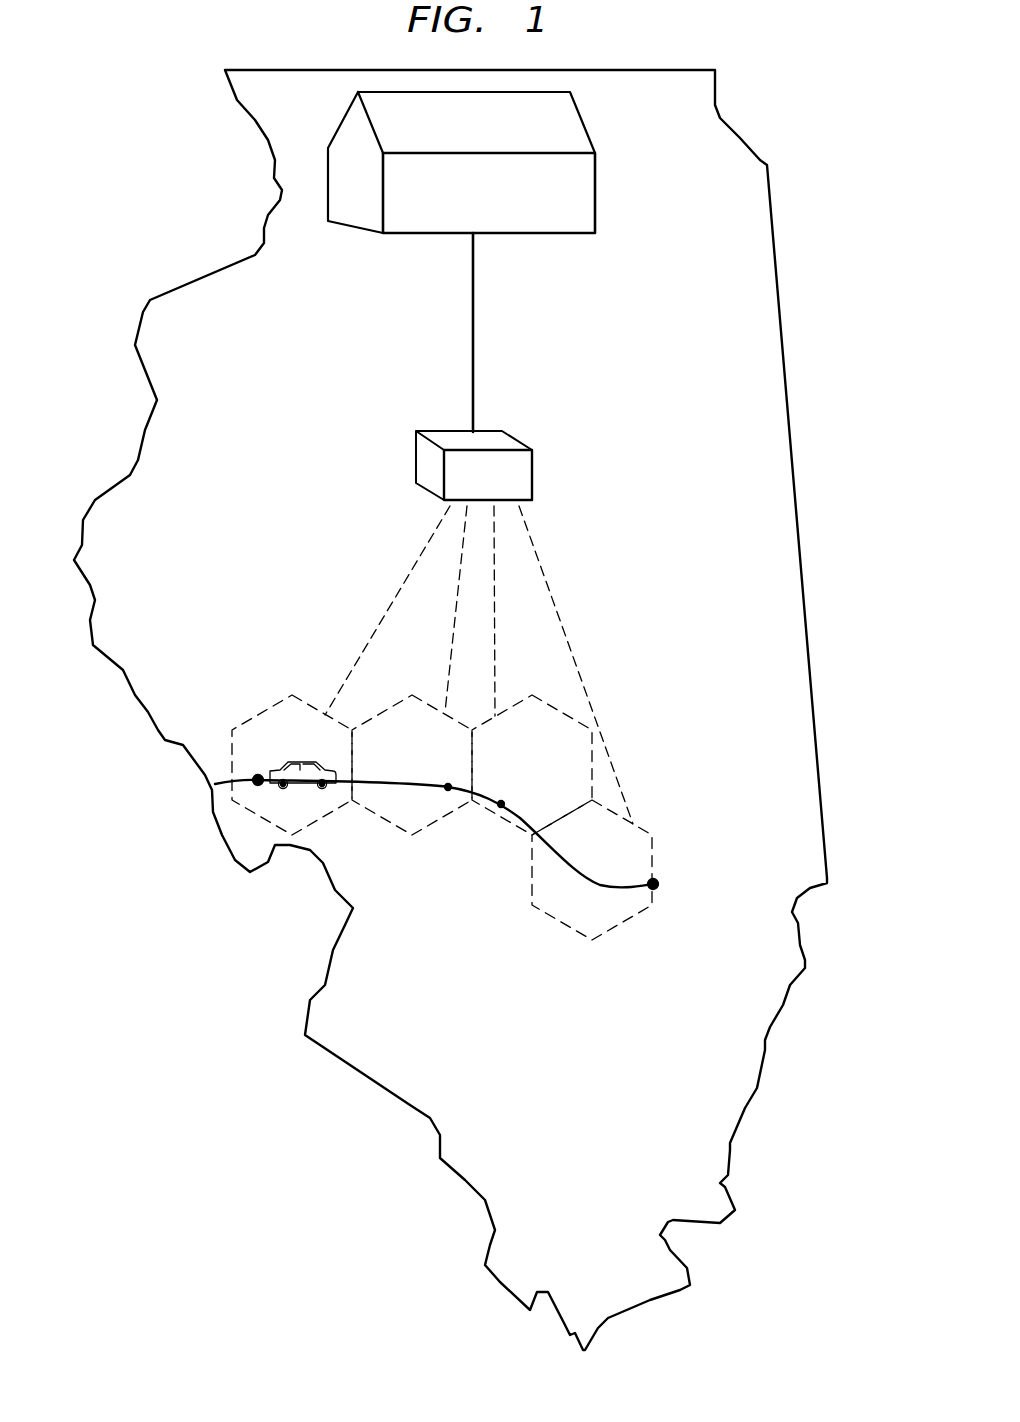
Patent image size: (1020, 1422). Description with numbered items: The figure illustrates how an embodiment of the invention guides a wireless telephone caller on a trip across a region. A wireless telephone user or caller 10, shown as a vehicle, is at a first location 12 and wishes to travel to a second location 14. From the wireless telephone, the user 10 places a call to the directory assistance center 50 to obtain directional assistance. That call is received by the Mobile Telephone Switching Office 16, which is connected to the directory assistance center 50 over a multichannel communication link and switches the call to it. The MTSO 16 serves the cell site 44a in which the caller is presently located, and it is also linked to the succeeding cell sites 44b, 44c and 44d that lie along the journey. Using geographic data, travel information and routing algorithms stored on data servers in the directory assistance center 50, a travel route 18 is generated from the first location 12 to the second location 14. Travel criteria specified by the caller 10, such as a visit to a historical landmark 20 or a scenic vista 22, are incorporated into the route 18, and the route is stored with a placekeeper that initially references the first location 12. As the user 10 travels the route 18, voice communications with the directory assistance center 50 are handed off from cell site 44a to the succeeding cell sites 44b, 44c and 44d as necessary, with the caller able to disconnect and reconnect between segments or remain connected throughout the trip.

The wireless telephone user 10 is at (300, 781).
The first location 12 is at (218, 784).
The second location 14 is at (653, 884).
The Mobile Telephone Switching Office 16 is at (532, 478).
The travel route 18 is at (597, 887).
The historical landmark 20 is at (501, 804).
The scenic vista 22 is at (448, 790).
The cell site 44a is at (292, 765).
The cell site 44b is at (412, 765).
The cell site 44c is at (532, 765).
The cell site 44d is at (592, 870).
The directory assistance center 50 is at (595, 194).